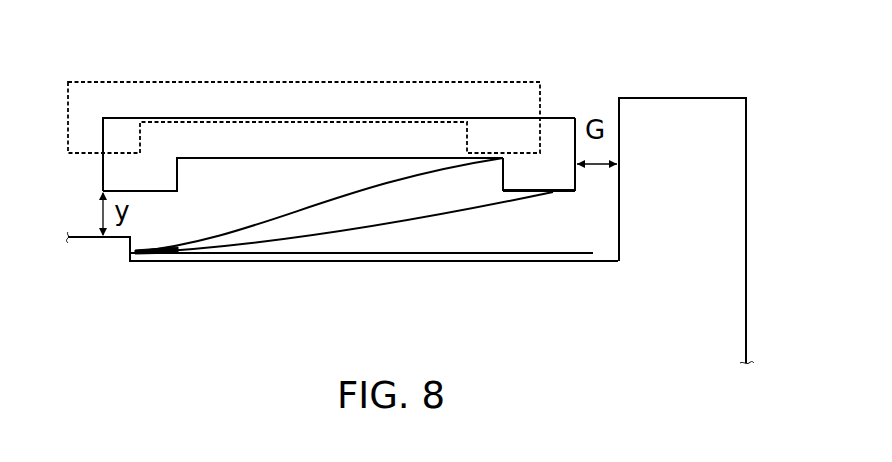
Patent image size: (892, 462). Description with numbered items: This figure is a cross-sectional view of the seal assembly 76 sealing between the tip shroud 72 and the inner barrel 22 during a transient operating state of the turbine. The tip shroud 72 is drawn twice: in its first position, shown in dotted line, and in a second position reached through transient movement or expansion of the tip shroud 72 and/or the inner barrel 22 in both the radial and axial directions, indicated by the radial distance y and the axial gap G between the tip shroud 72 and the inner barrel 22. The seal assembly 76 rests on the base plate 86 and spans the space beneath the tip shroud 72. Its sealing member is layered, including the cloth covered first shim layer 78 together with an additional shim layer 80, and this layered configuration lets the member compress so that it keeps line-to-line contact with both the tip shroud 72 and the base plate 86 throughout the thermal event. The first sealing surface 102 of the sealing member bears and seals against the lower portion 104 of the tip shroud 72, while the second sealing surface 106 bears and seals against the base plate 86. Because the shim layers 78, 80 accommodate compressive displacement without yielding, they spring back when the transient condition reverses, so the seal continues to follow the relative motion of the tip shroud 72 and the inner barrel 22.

The inner barrel 22 is at (736, 198).
The tip shroud 72 is at (478, 82).
The seal assembly 76 is at (232, 214).
The cloth covered first shim layer 78 is at (360, 230).
The second layer 80 is at (344, 222).
The base plate 86 is at (539, 262).
The first sealing surface 102 is at (553, 192).
The lower portion 104 is at (520, 195).
The second sealing surface 106 is at (191, 247).